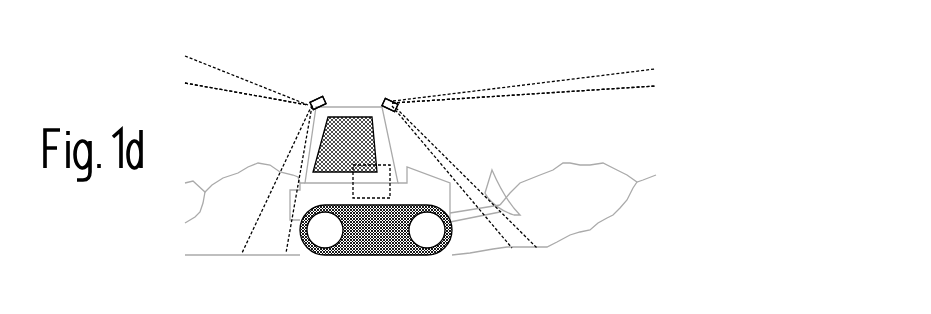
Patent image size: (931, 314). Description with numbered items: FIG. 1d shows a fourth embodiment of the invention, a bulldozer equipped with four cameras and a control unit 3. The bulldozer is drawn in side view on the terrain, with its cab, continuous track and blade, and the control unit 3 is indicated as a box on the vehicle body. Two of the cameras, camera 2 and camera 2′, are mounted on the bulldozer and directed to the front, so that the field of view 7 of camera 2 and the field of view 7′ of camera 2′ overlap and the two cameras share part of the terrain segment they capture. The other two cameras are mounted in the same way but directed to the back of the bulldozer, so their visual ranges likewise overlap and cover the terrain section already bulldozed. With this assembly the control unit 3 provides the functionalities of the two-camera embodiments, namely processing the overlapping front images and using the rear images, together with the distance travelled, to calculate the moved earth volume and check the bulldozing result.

The camera 2 is at (393, 98).
The camera 2′ is at (407, 99).
The control unit 3 is at (364, 193).
The field of view 7 is at (473, 110).
The field of view 7′ is at (503, 97).